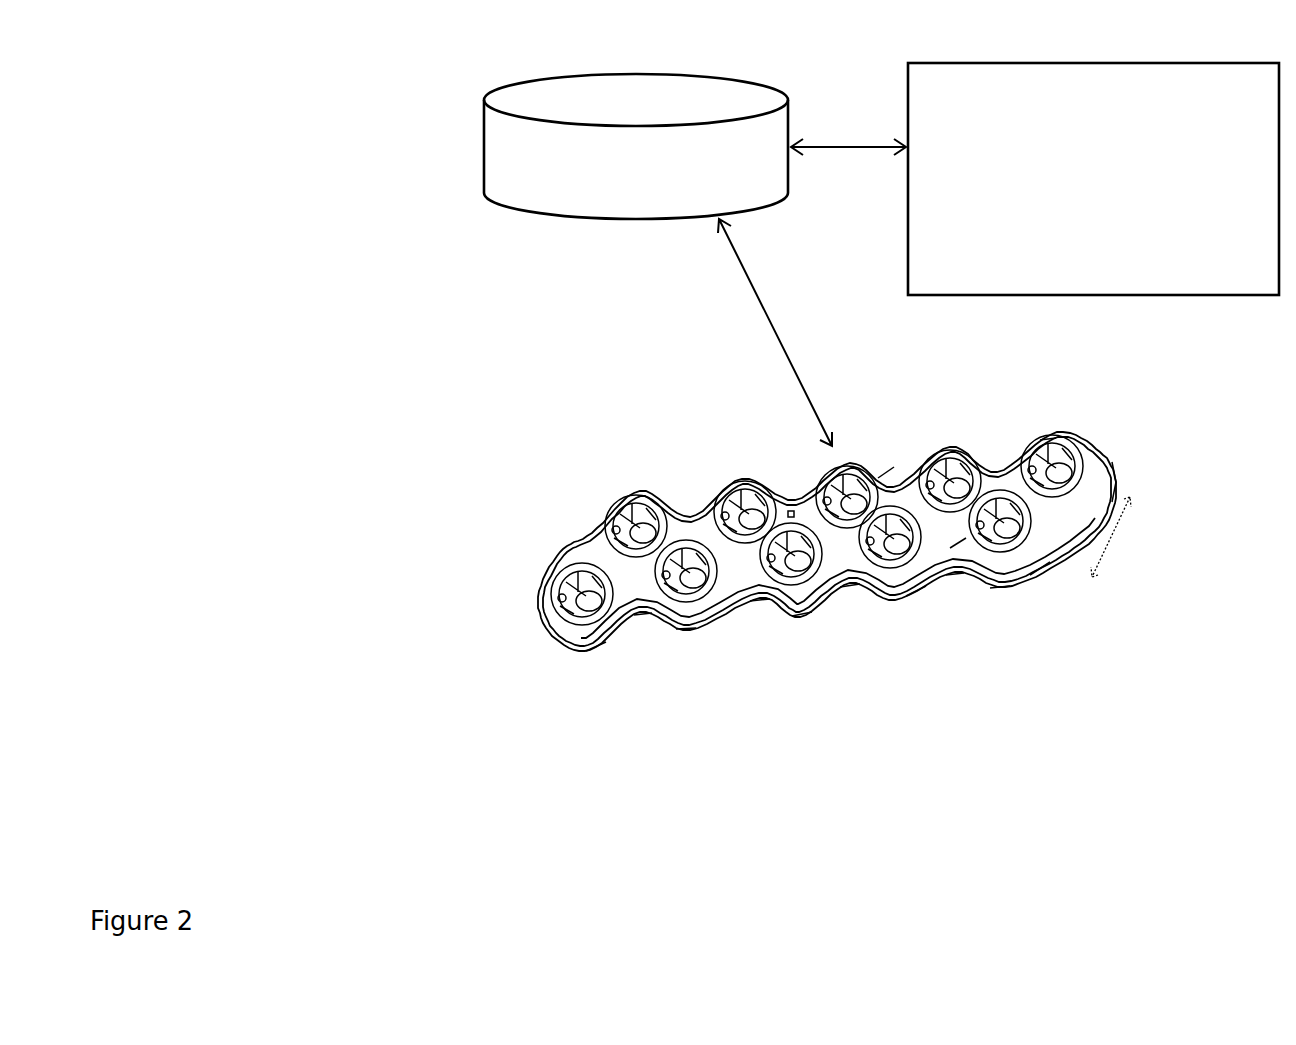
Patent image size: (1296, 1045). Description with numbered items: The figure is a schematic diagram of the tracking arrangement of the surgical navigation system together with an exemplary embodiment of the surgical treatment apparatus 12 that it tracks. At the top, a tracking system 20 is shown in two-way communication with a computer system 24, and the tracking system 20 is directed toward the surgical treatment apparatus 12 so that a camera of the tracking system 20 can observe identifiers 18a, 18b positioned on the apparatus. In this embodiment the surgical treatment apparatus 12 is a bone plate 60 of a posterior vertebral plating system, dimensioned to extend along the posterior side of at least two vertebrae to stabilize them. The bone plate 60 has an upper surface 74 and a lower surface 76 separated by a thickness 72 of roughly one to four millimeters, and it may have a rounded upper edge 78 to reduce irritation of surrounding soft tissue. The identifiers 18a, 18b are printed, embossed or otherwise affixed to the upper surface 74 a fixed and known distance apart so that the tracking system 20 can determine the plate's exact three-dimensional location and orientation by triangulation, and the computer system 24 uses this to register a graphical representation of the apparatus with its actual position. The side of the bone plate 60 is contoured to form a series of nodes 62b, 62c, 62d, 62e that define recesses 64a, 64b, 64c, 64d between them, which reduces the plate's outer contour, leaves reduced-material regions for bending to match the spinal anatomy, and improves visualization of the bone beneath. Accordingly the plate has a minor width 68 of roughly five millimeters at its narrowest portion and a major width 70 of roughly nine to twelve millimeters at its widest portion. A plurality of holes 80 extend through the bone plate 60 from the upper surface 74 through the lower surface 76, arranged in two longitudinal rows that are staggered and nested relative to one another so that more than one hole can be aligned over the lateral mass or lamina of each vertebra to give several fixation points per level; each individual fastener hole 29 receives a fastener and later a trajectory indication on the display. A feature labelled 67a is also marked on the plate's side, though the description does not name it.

The tracking system 20 is at (672, 73).
The computer system 24 is at (1013, 62).
The surgical treatment apparatus 12 is at (743, 480).
The identifier 18a is at (600, 537).
The identifier 18b is at (791, 510).
The holes 80 is at (637, 497).
The upper surface 74 is at (843, 462).
The rounded upper edge 78 is at (886, 470).
The minor width 68 is at (958, 542).
The fastener hole 29 is at (1047, 434).
The bone plate 60 is at (1068, 438).
The lower surface 76 is at (1118, 479).
The major width 70 is at (1113, 541).
The thickness 72 is at (1042, 568).
The side recess 67a is at (1000, 587).
The recess 64a is at (957, 577).
The node 62b is at (916, 603).
The recess 64b is at (850, 597).
The node 62c is at (803, 620).
The recess 64c is at (743, 610).
The node 62d is at (683, 633).
The recess 64d is at (647, 617).
The node 62e is at (600, 648).